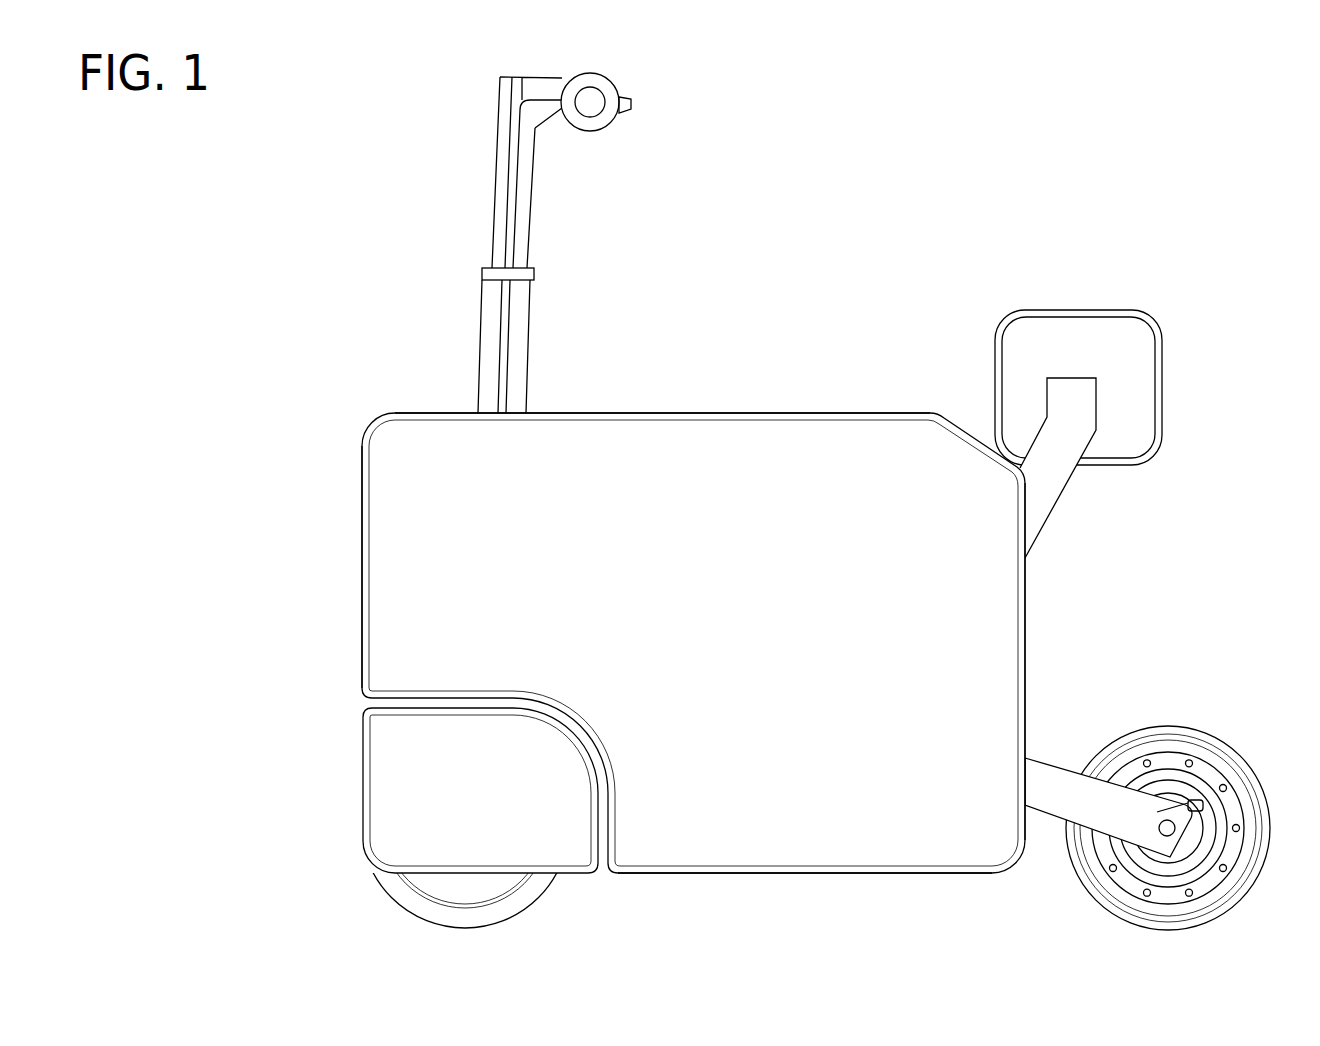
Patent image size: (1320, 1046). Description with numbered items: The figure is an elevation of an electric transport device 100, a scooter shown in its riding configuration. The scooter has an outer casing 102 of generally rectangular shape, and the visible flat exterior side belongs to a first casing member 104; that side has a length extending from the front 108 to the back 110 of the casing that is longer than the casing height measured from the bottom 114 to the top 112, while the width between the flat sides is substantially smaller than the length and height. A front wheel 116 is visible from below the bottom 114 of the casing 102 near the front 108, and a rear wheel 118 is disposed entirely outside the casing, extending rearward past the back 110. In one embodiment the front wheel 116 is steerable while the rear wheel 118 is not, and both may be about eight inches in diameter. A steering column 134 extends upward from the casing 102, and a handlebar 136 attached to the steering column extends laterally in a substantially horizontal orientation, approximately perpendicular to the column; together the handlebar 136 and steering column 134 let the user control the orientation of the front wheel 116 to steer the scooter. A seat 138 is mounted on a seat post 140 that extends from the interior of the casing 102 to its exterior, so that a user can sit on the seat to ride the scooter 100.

The electric transport device 100 is at (1200, 120).
The outer casing 102 is at (346, 640).
The first casing member 104 is at (907, 873).
The front of the casing 108 is at (360, 510).
The back of the casing 110 is at (1025, 620).
The top of the casing 112 is at (718, 412).
The bottom of the casing 114 is at (730, 873).
The front wheel 116 is at (410, 896).
The rear wheel 118 is at (1212, 888).
The steering column 134 is at (505, 318).
The handlebar 136 is at (608, 86).
The seat 138 is at (1080, 324).
The seat post 140 is at (1052, 493).